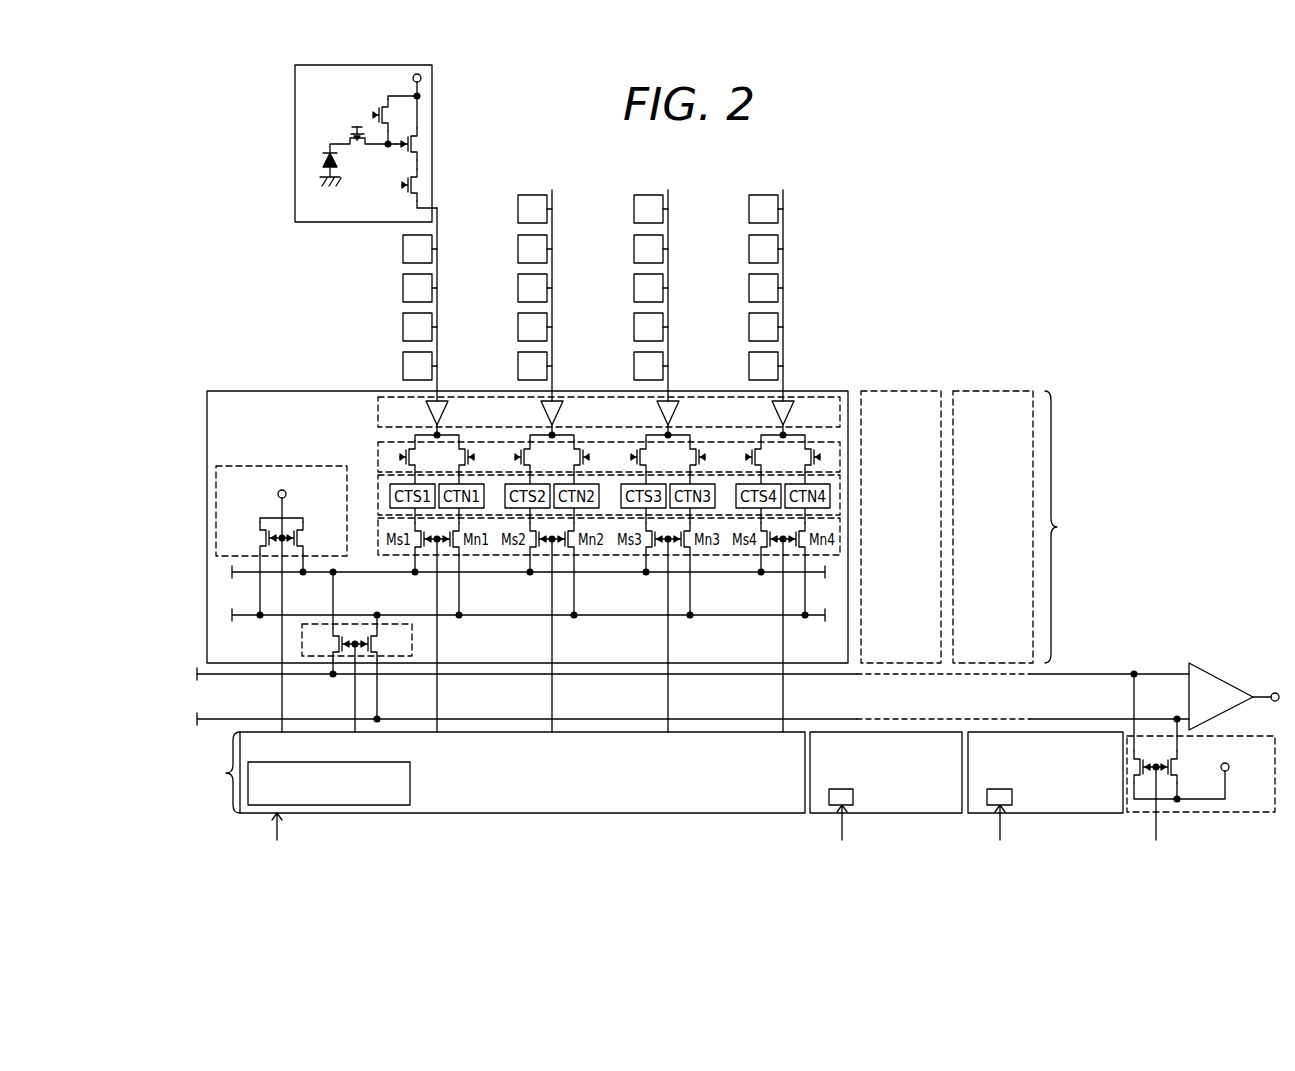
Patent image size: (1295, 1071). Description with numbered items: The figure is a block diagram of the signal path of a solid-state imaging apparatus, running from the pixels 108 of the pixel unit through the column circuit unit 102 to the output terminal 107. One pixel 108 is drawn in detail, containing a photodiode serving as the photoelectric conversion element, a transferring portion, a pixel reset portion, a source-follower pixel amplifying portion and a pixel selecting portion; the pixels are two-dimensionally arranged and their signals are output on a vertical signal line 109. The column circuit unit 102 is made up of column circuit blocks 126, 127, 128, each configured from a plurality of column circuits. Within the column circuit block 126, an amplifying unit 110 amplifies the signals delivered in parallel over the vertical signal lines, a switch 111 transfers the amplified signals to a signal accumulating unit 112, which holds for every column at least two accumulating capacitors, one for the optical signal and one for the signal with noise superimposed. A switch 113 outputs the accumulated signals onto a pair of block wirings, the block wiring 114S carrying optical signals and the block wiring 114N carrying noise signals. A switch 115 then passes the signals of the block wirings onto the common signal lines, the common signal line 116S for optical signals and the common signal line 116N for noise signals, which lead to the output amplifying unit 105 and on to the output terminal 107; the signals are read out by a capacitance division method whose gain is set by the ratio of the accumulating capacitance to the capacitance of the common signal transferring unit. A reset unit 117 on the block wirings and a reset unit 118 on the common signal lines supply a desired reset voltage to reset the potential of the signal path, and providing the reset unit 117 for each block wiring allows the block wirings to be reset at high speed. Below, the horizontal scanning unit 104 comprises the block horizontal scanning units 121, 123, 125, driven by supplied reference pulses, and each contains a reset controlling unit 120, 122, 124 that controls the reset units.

The column circuit unit 102 is at (1071, 527).
The horizontal scanning unit 104 is at (213, 772).
The output amplifying unit 105 is at (1214, 672).
The output terminal 107 is at (1272, 692).
The pixel 108 is at (432, 100).
The vertical signal line 109 is at (437, 200).
The amplifying unit 110 is at (378, 404).
The switch 111 is at (378, 456).
The signal accumulating unit 112 is at (378, 500).
The switch 113 is at (400, 558).
The block wiring 114S is at (818, 578).
The block wiring 114N is at (818, 621).
The switch 115 is at (412, 640).
The common signal line 116S is at (1161, 674).
The common signal line 116N is at (1155, 719).
The reset unit 117 is at (216, 485).
The reset unit 118 is at (1195, 814).
The reset controlling unit 120 is at (410, 783).
The block horizontal scanning unit 121 is at (717, 732).
The reset controlling unit 122 is at (829, 800).
The block horizontal scanning unit 123 is at (895, 732).
The reset controlling unit 124 is at (987, 800).
The block horizontal scanning unit 125 is at (1011, 732).
The column circuit block 126 is at (829, 391).
The column circuit block 127 is at (917, 391).
The column circuit block 128 is at (1009, 391).